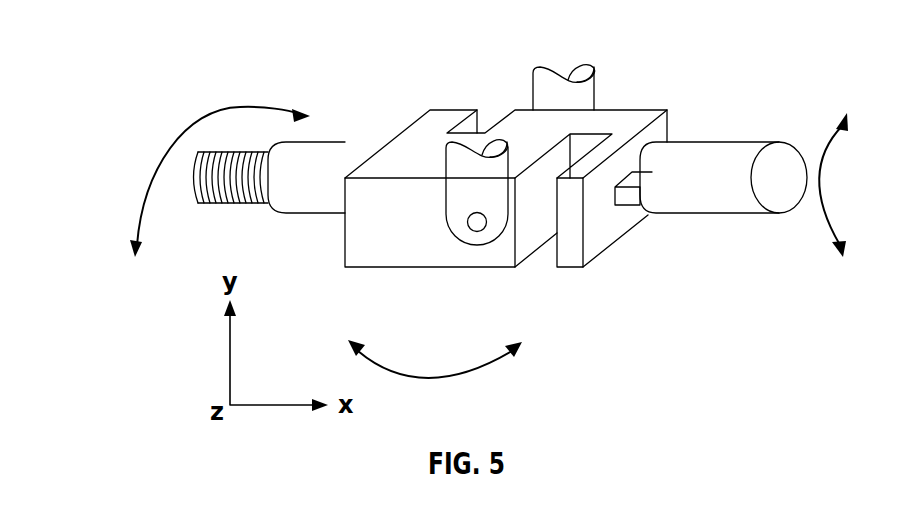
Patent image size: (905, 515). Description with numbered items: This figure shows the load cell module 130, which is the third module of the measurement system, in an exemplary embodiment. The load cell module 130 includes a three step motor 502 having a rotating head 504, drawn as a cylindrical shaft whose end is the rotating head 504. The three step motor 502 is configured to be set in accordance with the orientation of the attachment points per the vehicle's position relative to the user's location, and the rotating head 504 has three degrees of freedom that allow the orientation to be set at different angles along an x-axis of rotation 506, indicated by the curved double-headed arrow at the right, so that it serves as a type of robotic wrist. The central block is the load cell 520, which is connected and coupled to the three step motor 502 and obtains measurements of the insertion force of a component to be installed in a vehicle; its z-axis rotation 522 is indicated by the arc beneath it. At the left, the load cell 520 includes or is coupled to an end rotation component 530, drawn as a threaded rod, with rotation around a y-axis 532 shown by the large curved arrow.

The load cell module 130 is at (134, 36).
The three step motor 502 is at (738, 131).
The rotating head 504 is at (778, 165).
The x-axis of rotation 506 is at (823, 228).
The load cell 520 is at (504, 281).
The z-axis rotation 522 is at (470, 373).
The end rotation component 530 is at (345, 142).
The rotation around a y-axis 532 is at (180, 137).